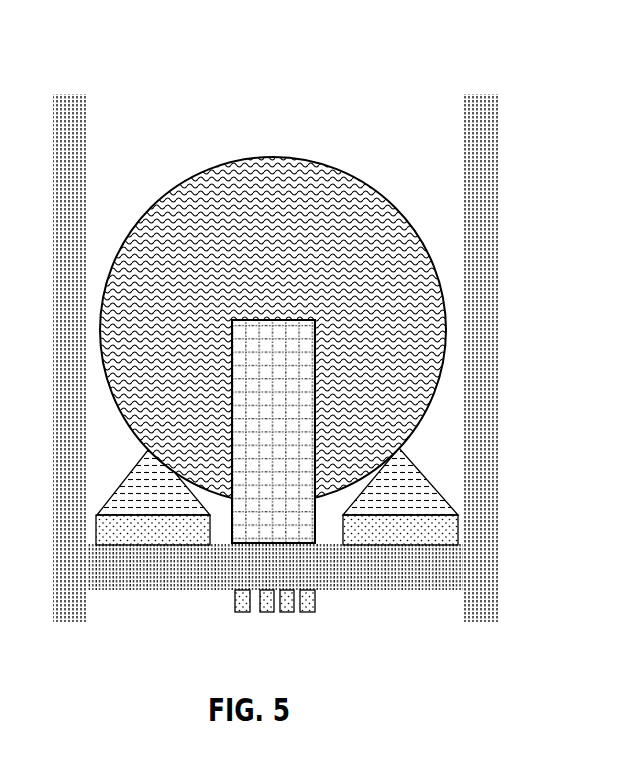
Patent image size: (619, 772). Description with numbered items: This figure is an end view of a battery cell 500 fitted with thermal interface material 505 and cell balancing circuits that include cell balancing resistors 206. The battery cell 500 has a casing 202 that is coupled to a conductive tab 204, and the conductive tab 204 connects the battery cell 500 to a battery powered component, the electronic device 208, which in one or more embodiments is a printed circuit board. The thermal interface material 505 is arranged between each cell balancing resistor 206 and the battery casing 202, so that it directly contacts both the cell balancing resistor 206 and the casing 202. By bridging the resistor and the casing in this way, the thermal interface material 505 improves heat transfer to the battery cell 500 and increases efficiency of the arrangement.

The battery cell 500 is at (324, 90).
The electronic device 208 is at (499, 339).
The casing 202 is at (284, 278).
The conductive tab 204 is at (291, 488).
The thermal interface material 505 is at (164, 504).
The cell balancing resistor 206 is at (277, 531).